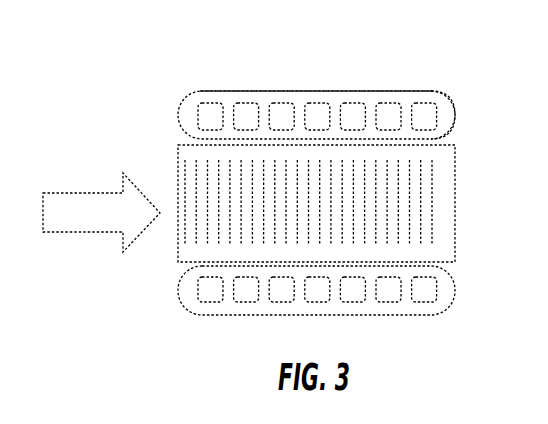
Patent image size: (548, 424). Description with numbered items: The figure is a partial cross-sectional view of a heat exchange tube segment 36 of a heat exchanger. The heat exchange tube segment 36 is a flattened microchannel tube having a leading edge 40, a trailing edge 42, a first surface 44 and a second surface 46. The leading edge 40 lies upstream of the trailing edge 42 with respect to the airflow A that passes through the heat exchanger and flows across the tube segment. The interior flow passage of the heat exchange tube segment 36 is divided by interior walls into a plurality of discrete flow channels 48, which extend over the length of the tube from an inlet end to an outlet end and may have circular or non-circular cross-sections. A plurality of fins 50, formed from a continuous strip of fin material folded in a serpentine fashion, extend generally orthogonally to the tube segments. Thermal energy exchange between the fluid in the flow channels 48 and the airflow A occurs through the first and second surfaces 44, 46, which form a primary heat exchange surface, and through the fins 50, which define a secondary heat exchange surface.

The heat exchange tube segment 36 is at (342, 90).
The leading edge 40 is at (179, 112).
The trailing edge 42 is at (455, 107).
The first surface 44 is at (217, 91).
The second surface 46 is at (348, 315).
The flow channels 48 is at (249, 110).
The fins 50 is at (433, 170).
The airflow A is at (93, 212).